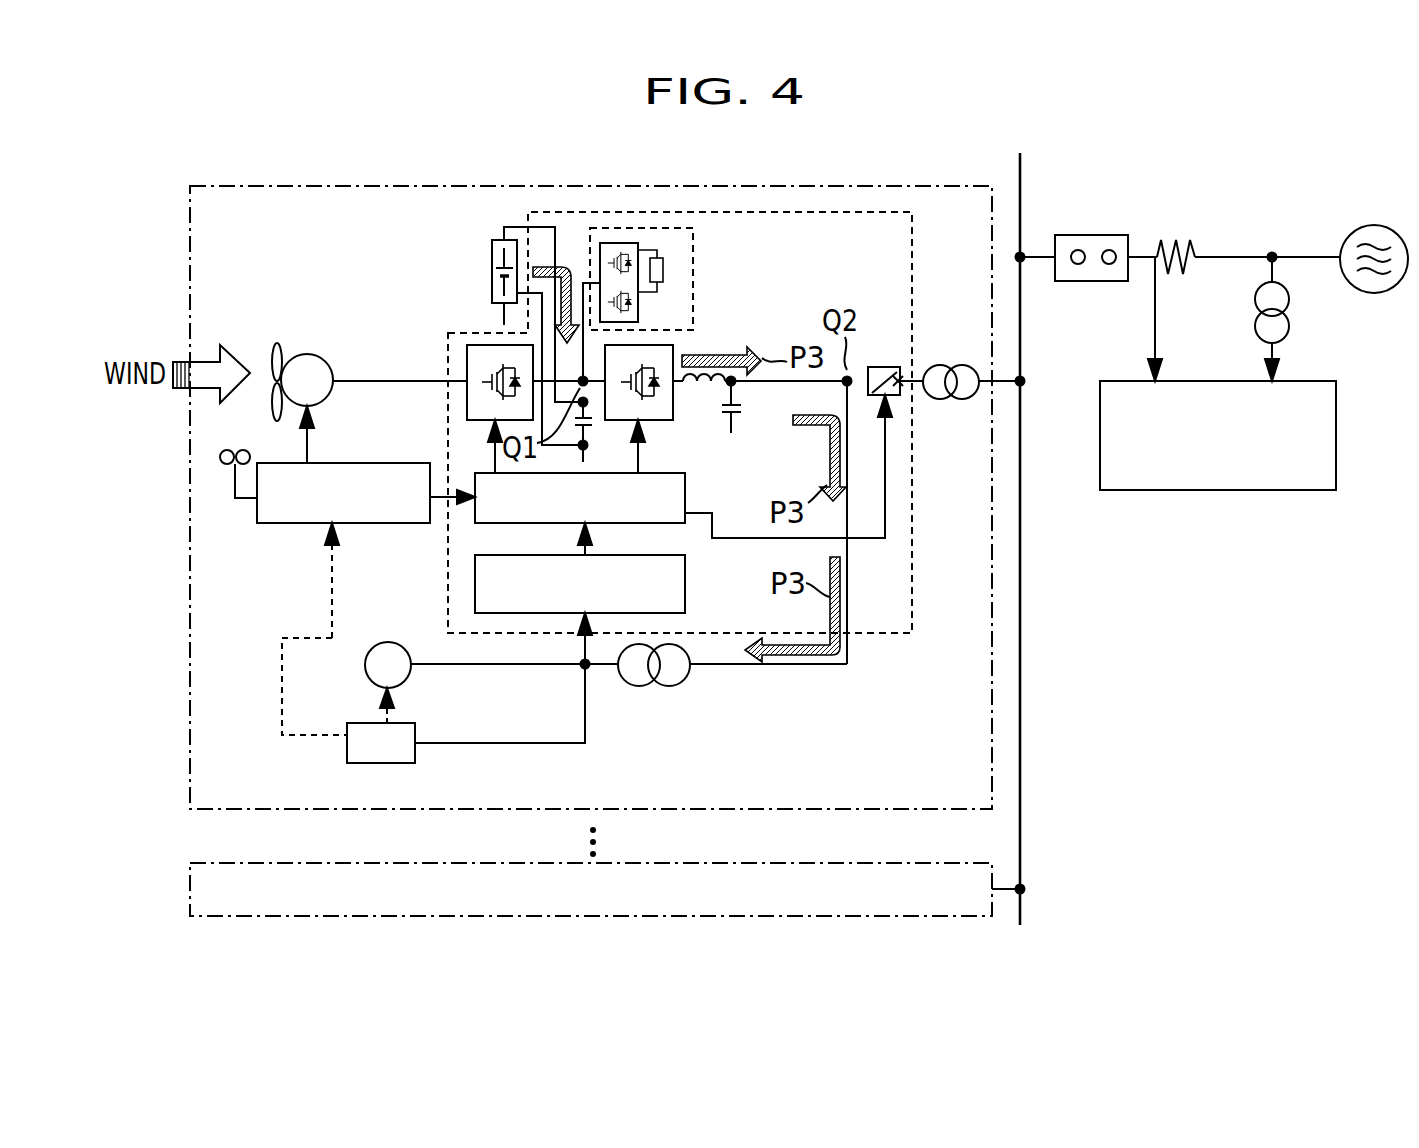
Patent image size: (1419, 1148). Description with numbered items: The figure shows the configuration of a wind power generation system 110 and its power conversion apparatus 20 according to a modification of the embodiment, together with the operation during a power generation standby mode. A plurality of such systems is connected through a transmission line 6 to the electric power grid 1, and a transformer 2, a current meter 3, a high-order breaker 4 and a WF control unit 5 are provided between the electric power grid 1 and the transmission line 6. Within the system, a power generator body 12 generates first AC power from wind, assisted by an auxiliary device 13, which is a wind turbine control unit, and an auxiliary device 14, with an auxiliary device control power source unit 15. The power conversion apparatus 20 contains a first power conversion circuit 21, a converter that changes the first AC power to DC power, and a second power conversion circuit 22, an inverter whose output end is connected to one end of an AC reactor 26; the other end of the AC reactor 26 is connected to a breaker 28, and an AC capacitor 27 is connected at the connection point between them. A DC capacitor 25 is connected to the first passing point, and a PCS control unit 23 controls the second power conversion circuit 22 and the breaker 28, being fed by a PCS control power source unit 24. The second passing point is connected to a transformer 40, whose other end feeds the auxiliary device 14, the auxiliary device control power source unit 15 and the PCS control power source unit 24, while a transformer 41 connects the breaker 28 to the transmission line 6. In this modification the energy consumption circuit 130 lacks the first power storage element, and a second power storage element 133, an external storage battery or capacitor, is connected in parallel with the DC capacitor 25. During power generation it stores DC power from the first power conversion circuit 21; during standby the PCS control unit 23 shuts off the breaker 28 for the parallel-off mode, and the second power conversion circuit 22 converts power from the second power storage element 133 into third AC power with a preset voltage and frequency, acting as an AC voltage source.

The electric power grid 1 is at (1386, 224).
The transformer 2 is at (1290, 321).
The current meter 3 is at (1191, 238).
The high-order breaker 4 is at (1117, 235).
The WF control unit 5 is at (1293, 490).
The transmission line 6 is at (1021, 542).
The power generator body 12 is at (310, 353).
The auxiliary device 13 is at (277, 525).
The auxiliary device 14 is at (367, 663).
The auxiliary device control power source unit 15 is at (347, 745).
The power conversion apparatus 20 is at (912, 248).
The first power conversion circuit 21 is at (470, 345).
The second power conversion circuit 22 is at (673, 347).
The PCS control unit 23 is at (685, 490).
The PCS control power source unit 24 is at (685, 575).
The DC capacitor 25 is at (591, 430).
The AC reactor 26 is at (707, 388).
The AC capacitor 27 is at (742, 413).
The breaker 28 is at (885, 367).
The transformer 40 is at (672, 686).
The transformer 41 is at (943, 400).
The wind power generation system 110 is at (190, 585).
The energy consumption circuit 130 is at (693, 253).
The second power storage element 133 is at (500, 240).